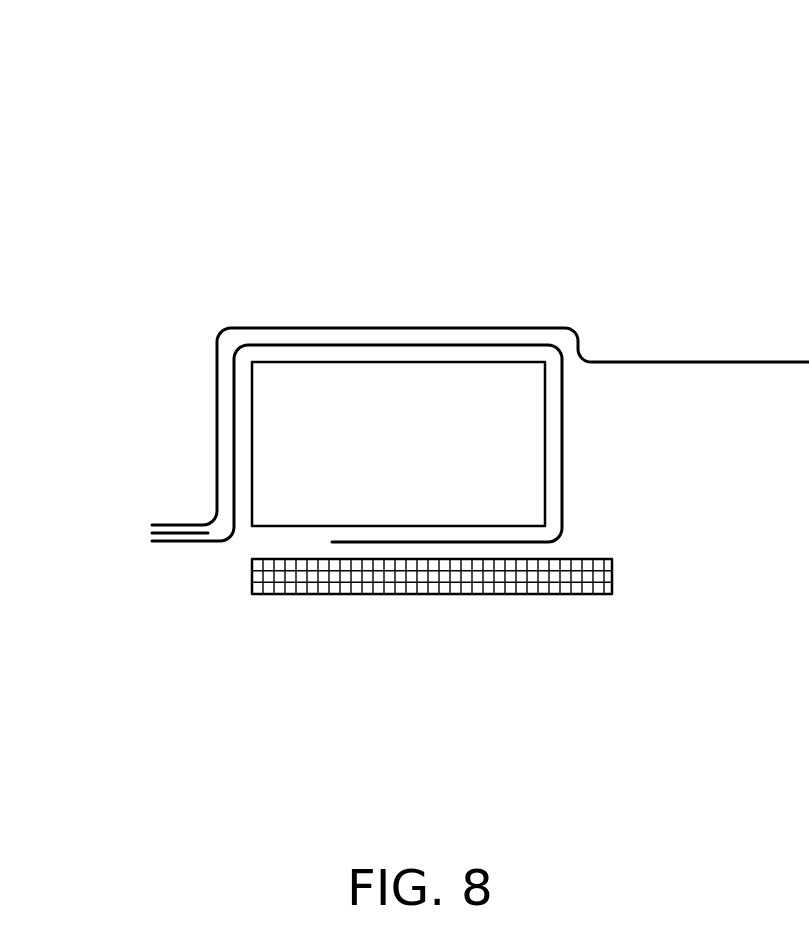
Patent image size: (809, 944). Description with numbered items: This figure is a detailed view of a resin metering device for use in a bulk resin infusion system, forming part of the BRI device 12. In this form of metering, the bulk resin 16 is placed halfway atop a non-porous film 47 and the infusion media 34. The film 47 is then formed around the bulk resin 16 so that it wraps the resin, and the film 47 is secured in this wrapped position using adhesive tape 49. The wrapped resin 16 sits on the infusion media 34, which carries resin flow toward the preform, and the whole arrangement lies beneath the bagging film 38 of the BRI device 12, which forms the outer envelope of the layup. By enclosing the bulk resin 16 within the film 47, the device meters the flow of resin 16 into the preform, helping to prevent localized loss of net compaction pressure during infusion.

The BRI device 12 is at (430, 30).
The bagging film 38 is at (323, 327).
The non-porous film 47 is at (383, 345).
The resin 16 is at (437, 361).
The infusion media 34 is at (583, 559).
The adhesive tape 49 is at (169, 531).